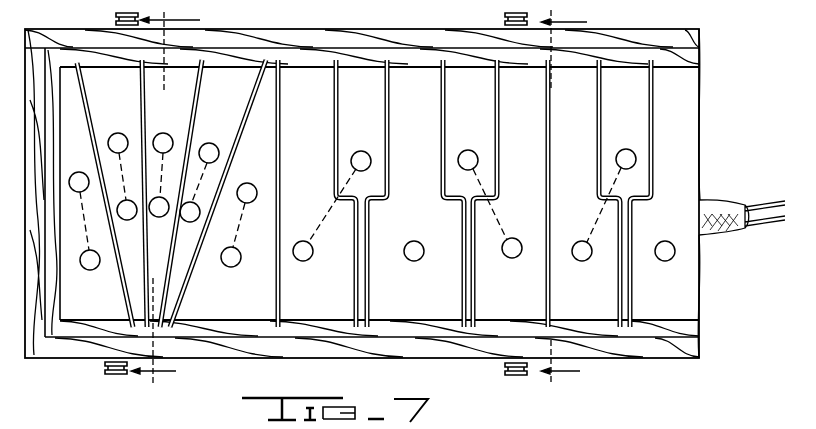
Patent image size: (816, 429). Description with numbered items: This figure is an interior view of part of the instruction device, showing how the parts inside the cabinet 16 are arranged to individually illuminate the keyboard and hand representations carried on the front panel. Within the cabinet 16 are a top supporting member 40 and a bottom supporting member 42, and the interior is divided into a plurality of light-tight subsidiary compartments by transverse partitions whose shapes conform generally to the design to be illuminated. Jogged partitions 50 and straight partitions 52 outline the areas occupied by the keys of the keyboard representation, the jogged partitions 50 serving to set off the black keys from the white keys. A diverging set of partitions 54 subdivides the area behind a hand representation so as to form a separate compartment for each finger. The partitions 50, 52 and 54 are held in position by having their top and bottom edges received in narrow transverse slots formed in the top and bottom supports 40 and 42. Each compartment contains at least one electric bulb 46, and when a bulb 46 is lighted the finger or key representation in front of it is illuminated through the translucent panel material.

The cabinet 16 is at (176, 350).
The top supporting member 40 is at (288, 62).
The bottom supporting member 42 is at (300, 328).
The electric bulb 46 is at (208, 143).
The jogged partition 50 is at (389, 196).
The straight partition 52 is at (551, 130).
The diverging partition 54 is at (140, 123).